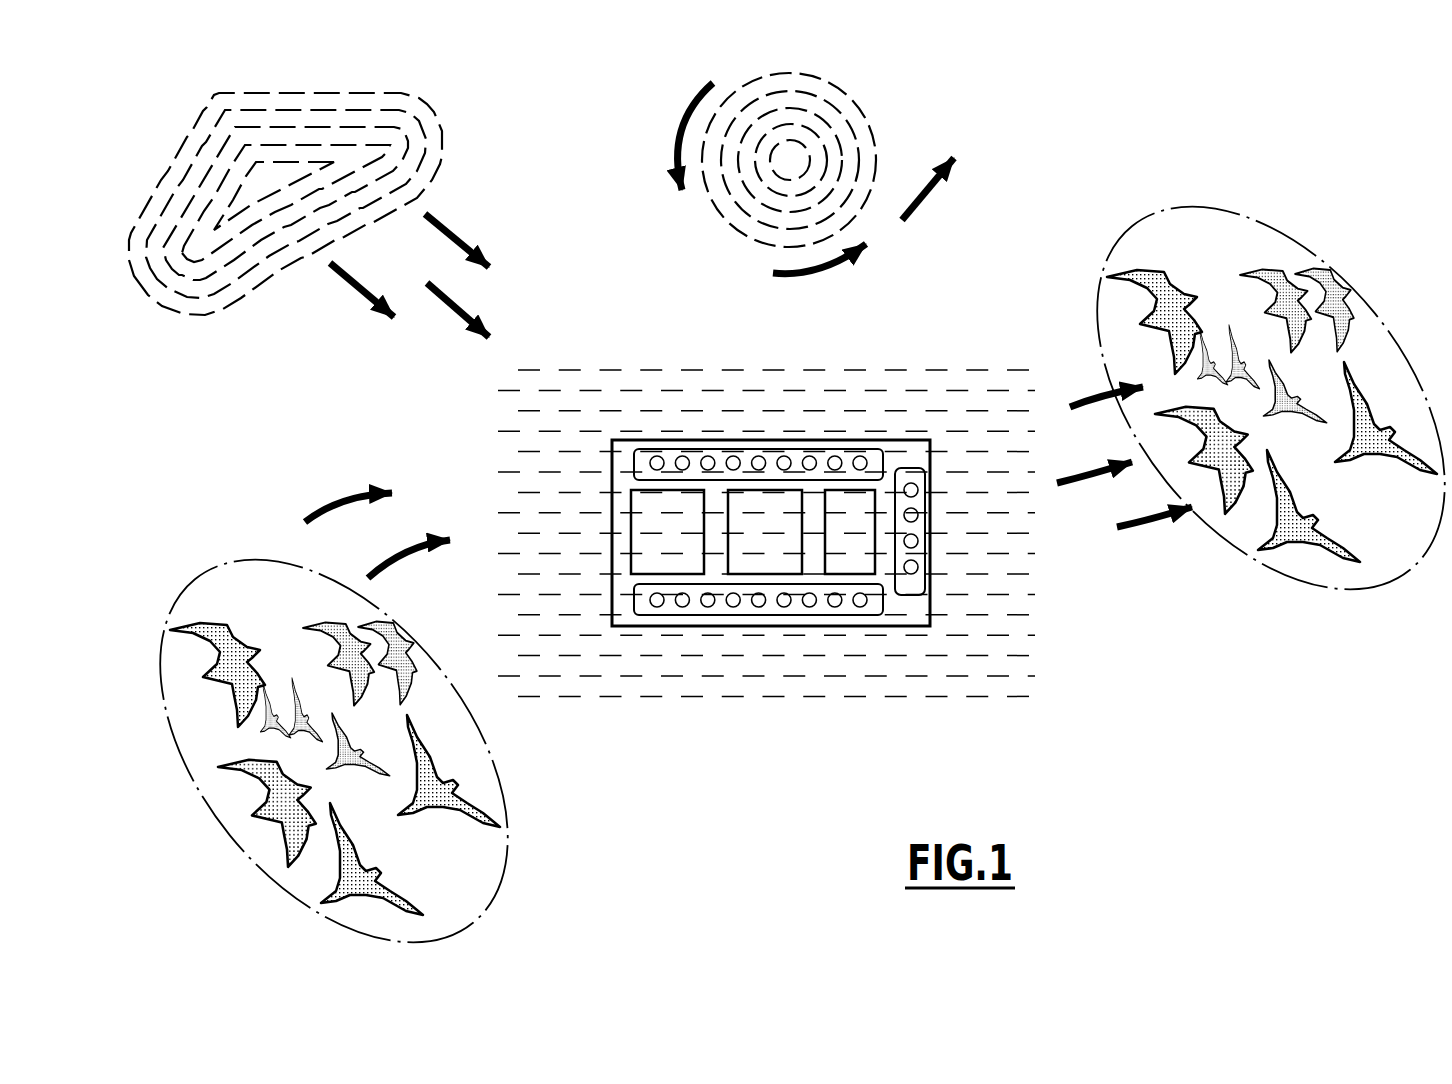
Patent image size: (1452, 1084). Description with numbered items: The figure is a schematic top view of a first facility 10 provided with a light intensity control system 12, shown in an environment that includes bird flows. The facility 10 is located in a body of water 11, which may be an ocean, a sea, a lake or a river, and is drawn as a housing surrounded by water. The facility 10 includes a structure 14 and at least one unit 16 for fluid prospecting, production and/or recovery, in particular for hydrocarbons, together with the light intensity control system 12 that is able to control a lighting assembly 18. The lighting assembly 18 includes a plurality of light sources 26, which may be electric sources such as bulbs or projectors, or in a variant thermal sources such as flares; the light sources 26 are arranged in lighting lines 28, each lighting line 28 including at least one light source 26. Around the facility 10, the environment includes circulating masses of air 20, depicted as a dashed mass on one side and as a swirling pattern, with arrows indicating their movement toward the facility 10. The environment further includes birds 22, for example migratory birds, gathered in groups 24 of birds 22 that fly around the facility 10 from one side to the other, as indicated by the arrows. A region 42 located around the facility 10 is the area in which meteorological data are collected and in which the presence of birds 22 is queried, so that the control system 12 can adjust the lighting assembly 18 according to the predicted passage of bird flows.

The facility 10 is at (792, 561).
The body of water 11 is at (536, 438).
The light intensity control system 12 is at (753, 538).
The structure 14 is at (849, 548).
The unit for fluid prospecting, production and/or recovery 16 is at (651, 538).
The lighting assembly 18 is at (772, 426).
The circulating masses of air 20 is at (437, 138).
The birds 22 is at (230, 663).
The groups of birds 24 is at (217, 823).
The light sources 26 is at (735, 456).
The lighting lines 28 is at (912, 596).
The region 42 is at (1045, 114).